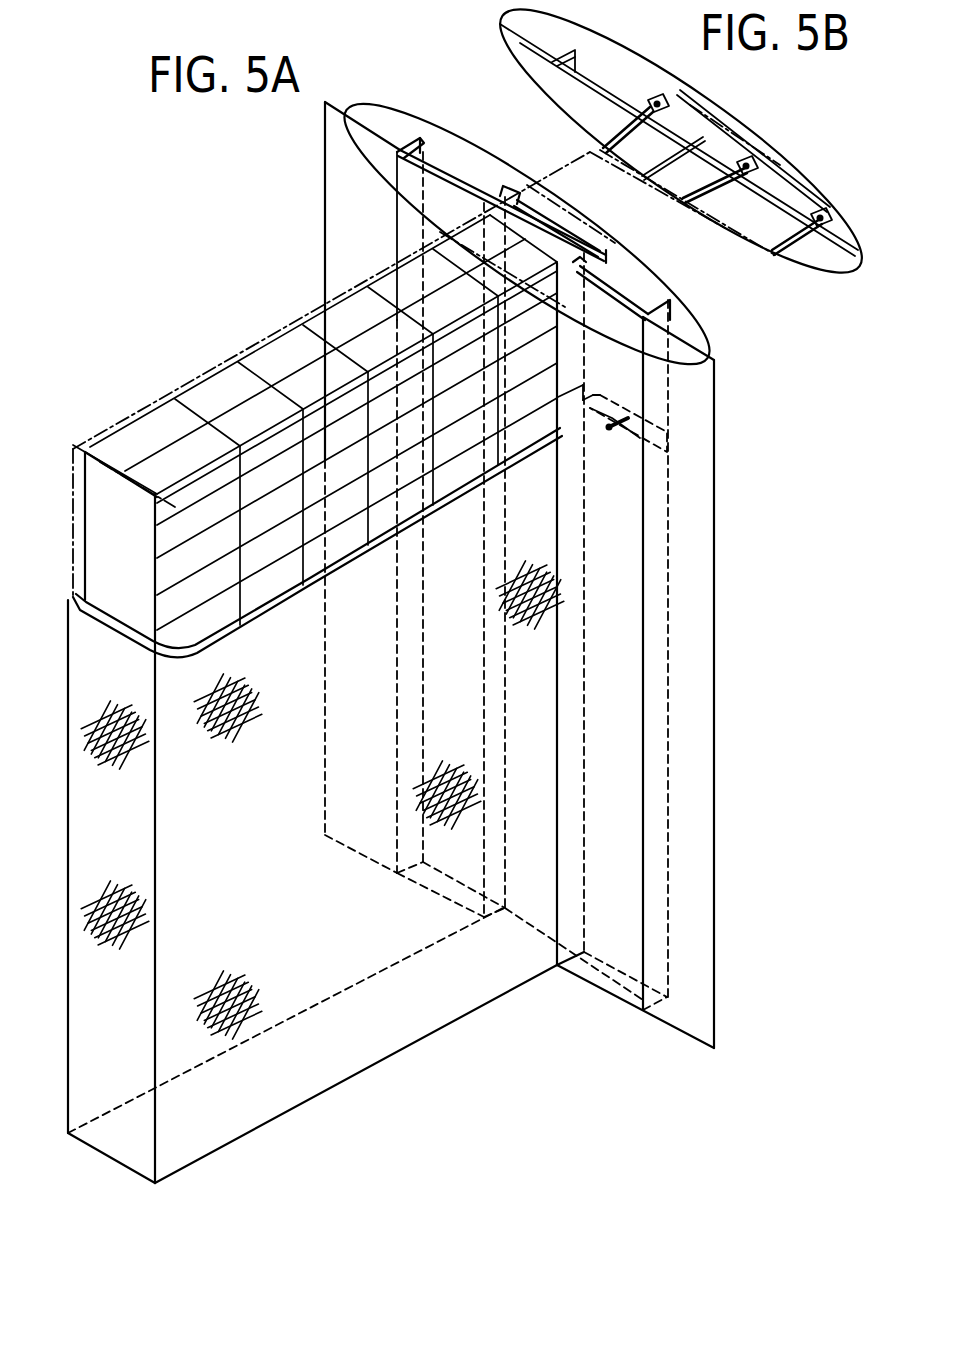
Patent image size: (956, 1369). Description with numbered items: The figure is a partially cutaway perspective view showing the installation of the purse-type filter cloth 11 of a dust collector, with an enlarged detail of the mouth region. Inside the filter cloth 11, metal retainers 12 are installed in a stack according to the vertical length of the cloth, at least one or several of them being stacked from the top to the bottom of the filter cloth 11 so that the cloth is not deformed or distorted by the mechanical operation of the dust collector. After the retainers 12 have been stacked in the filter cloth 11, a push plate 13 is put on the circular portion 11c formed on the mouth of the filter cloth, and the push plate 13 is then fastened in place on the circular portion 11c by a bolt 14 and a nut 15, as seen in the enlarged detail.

In FIG. 5A, the purse-type filter cloth 11 is at (80, 822).
In FIG. 5B, the circular portion 11c is at (657, 102).
In FIG. 5A, the retainer 12 is at (512, 190).
In FIG. 5B, the retainer 12 is at (674, 110).
In FIG. 5A, the push plate 13 is at (622, 410).
In FIG. 5B, the push plate 13 is at (826, 216).
In FIG. 5A, the bolt 14 is at (614, 427).
In FIG. 5B, the bolt 14 is at (795, 187).
In FIG. 5B, the nut 15 is at (797, 187).